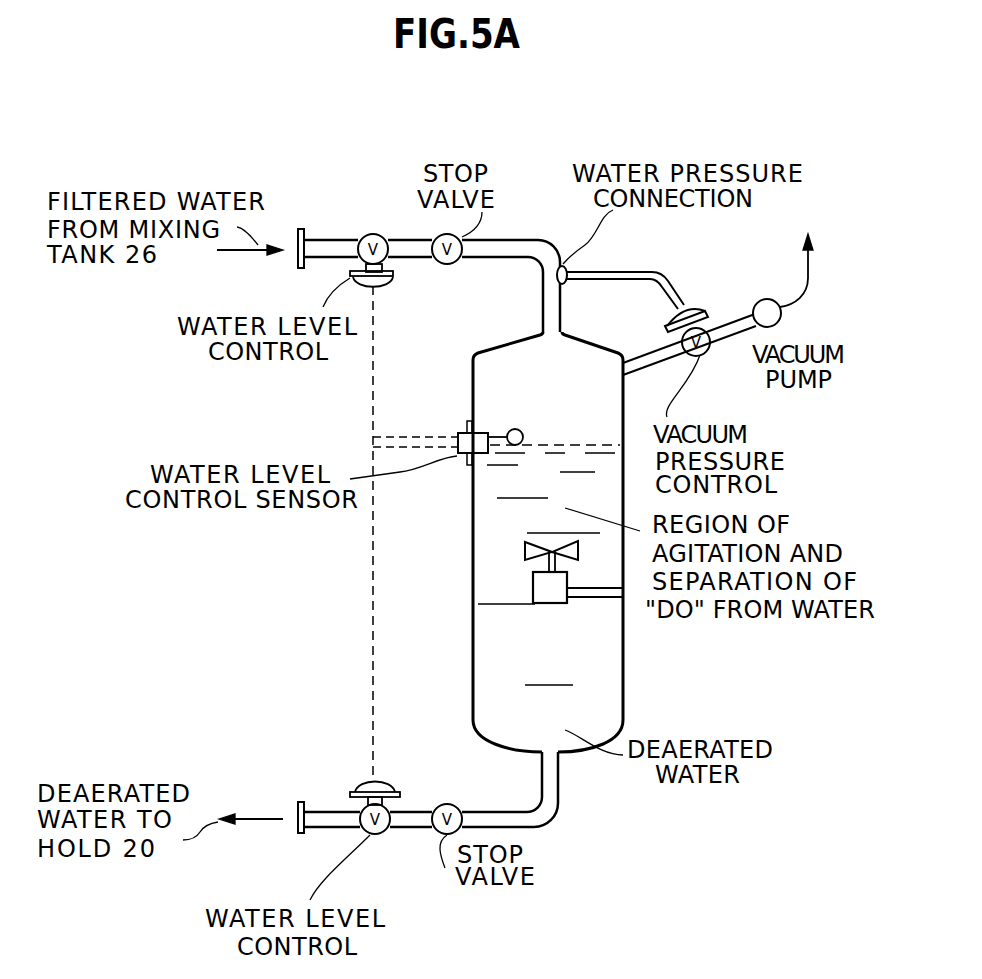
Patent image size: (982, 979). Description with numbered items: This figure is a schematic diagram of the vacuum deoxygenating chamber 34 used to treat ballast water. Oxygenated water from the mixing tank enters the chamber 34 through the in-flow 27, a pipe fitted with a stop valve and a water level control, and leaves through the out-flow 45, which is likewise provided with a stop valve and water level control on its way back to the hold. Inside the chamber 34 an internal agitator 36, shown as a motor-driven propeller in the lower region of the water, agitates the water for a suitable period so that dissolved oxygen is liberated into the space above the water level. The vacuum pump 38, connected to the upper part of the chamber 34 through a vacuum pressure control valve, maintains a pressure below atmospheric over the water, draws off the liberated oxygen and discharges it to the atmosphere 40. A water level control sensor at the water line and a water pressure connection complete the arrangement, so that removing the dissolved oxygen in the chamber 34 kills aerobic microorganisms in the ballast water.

The in-flow 27 is at (322, 240).
The vacuum chamber 34 is at (460, 535).
The internal agitator 36 is at (552, 592).
The vacuum pump 38 is at (760, 325).
The atmosphere 40 is at (822, 228).
The out-flow 45 is at (322, 808).